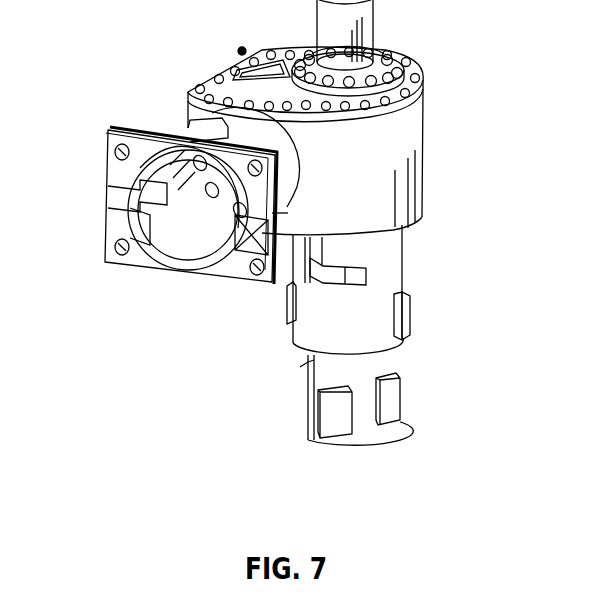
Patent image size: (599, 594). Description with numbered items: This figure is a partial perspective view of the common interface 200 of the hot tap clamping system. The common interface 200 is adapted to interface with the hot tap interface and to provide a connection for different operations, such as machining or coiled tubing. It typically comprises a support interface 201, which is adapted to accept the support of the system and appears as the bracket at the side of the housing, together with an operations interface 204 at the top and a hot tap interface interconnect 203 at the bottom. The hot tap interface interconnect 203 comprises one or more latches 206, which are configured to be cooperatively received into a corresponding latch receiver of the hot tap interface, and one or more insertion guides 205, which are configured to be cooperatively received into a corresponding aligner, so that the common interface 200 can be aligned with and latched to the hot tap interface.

The common interface 200 is at (220, 73).
The support interface 201 is at (108, 178).
The hot tap interface interconnect 203 is at (297, 390).
The operations interface 204 is at (313, 53).
The insertion guides 205 is at (337, 417).
The latches 206 is at (286, 300).